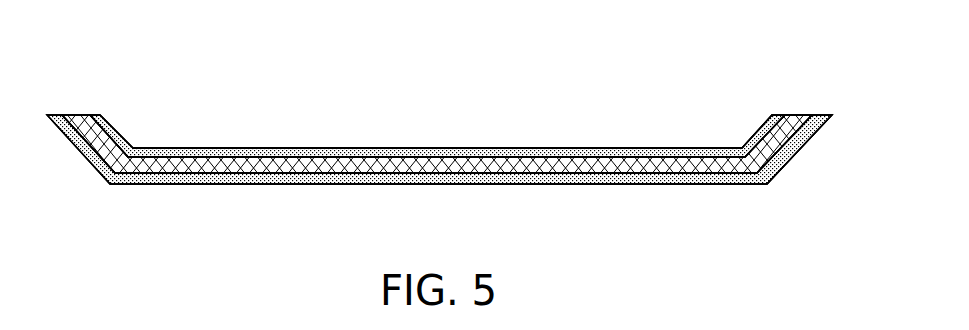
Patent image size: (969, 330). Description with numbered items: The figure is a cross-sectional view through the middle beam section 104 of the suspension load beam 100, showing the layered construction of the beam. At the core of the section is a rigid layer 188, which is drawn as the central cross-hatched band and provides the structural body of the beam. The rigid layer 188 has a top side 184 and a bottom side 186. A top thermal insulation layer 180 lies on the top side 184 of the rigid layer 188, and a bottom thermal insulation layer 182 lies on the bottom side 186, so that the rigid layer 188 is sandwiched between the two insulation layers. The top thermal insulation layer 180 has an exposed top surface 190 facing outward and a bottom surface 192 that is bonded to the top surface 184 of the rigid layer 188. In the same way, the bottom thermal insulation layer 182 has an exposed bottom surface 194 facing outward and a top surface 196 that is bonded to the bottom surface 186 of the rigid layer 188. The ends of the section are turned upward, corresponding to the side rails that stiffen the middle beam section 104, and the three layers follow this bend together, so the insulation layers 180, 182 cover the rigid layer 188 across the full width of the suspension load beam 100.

The suspension load beam 100 is at (631, 77).
The middle beam section 104 is at (672, 147).
The top thermal insulation layer 180 is at (322, 148).
The bottom thermal insulation layer 182 is at (700, 184).
The top side of rigid layer 184 is at (513, 147).
The bottom side of rigid layer 186 is at (513, 184).
The rigid layer 188 is at (798, 115).
The exposed top surface 190 is at (232, 138).
The bottom surface 192 is at (232, 172).
The exposed bottom surface 194 is at (157, 195).
The top surface 196 is at (155, 157).